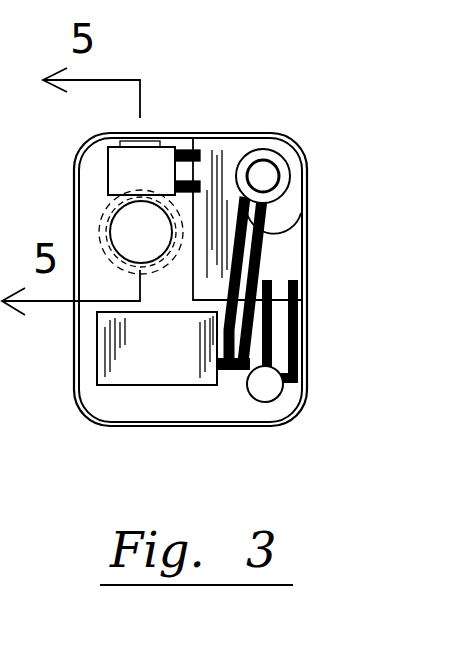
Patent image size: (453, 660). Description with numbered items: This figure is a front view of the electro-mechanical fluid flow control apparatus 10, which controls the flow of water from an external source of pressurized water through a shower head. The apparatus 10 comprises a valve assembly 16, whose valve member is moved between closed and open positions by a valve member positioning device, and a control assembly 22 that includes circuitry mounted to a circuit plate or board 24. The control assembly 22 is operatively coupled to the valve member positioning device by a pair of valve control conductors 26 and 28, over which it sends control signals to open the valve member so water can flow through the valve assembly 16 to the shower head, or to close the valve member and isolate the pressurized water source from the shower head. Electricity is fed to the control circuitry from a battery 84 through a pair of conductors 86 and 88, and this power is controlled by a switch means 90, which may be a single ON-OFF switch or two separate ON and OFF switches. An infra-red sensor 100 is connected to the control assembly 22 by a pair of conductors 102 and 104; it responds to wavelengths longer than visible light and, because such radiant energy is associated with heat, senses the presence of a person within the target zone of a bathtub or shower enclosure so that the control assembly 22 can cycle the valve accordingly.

The electro-mechanical fluid flow control apparatus 10 is at (275, 86).
The valve assembly 16 is at (180, 112).
The control assembly 22 is at (290, 138).
The circuit plate or board 24 is at (287, 254).
The valve control conductor 26 is at (185, 152).
The valve control conductor 28 is at (175, 182).
The battery 84 is at (108, 360).
The conductor 86 is at (303, 233).
The conductor 88 is at (303, 210).
The switch means 90 is at (270, 167).
The infra-red sensor 100 is at (272, 392).
The conductor 102 is at (268, 329).
The conductor 104 is at (296, 350).